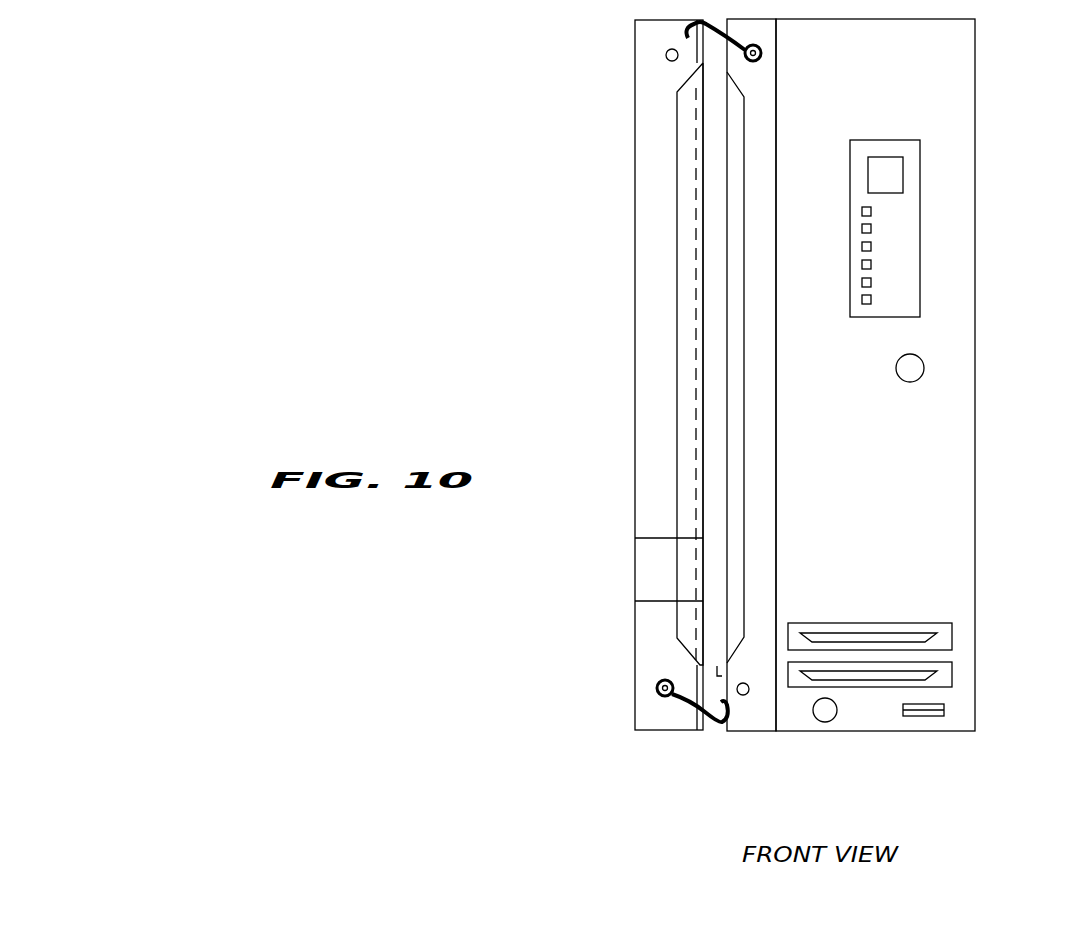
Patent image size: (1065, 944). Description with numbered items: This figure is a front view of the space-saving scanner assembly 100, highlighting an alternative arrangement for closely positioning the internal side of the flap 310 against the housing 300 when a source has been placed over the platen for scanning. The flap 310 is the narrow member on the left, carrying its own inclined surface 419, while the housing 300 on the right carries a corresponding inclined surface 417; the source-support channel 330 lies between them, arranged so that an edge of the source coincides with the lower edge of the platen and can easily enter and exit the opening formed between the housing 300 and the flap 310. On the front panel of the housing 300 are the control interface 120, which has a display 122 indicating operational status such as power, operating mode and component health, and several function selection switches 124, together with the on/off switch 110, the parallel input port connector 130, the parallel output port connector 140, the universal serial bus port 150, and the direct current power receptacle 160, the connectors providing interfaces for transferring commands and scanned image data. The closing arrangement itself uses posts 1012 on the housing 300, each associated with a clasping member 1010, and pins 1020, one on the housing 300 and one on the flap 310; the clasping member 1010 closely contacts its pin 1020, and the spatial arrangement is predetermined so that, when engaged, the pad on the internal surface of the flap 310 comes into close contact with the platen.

The space-saving scanner assembly 100 is at (500, 160).
The on/off switch 110 is at (913, 372).
The control interface 120 is at (886, 146).
The display 122 is at (893, 180).
The function selection switches 124 is at (872, 212).
The parallel input port connector 130 is at (907, 630).
The parallel output port connector 140 is at (848, 667).
The universal serial bus (USB) port 150 is at (935, 716).
The direct current (DC) power receptacle 160 is at (828, 722).
The housing 300 is at (978, 178).
The flap 310 is at (648, 348).
The source-support channel 330 is at (704, 676).
The inclined surface 417 is at (738, 340).
The inclined surface 419 is at (686, 190).
The clasping member 1010 is at (730, 33).
The post 1012 is at (760, 62).
The pin 1020 is at (667, 57).